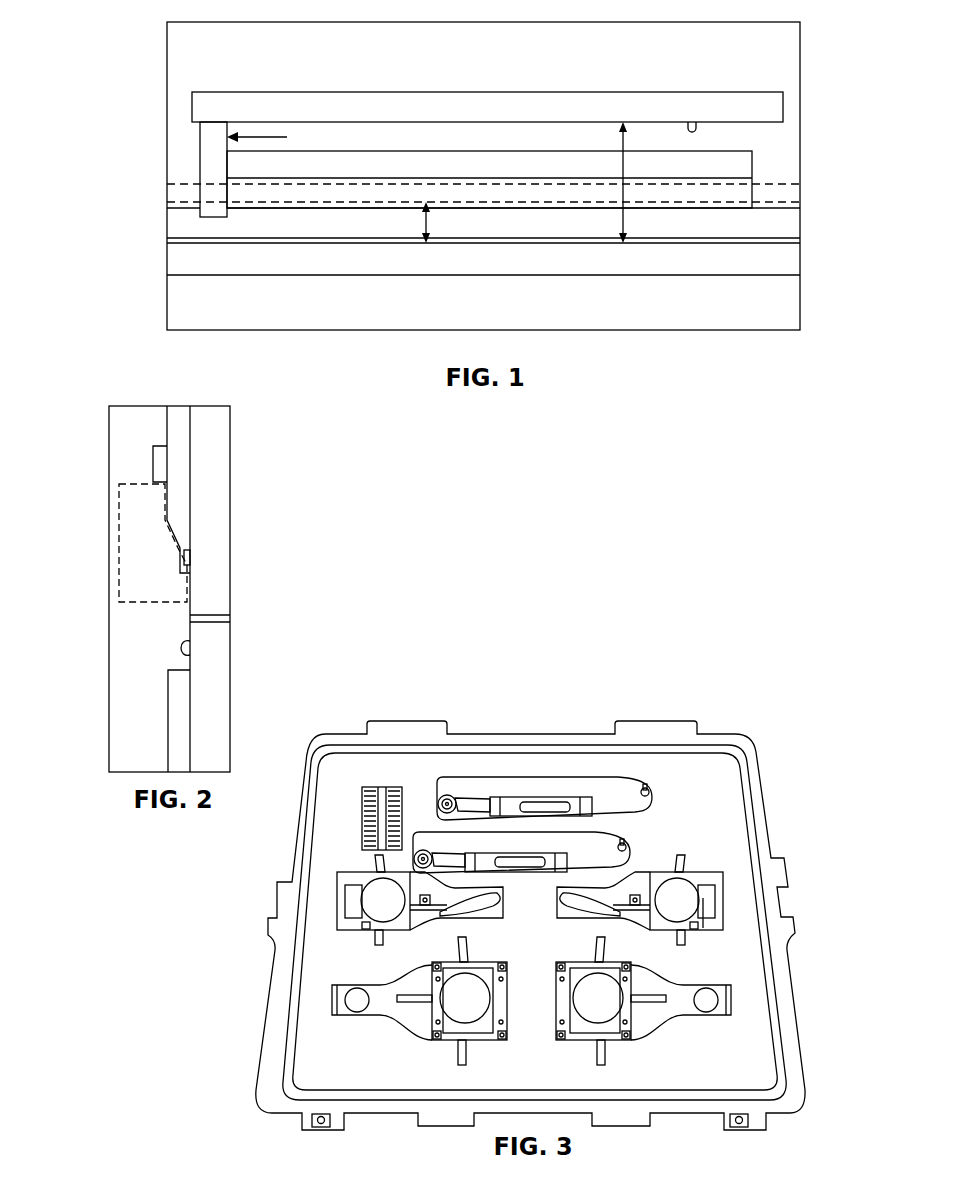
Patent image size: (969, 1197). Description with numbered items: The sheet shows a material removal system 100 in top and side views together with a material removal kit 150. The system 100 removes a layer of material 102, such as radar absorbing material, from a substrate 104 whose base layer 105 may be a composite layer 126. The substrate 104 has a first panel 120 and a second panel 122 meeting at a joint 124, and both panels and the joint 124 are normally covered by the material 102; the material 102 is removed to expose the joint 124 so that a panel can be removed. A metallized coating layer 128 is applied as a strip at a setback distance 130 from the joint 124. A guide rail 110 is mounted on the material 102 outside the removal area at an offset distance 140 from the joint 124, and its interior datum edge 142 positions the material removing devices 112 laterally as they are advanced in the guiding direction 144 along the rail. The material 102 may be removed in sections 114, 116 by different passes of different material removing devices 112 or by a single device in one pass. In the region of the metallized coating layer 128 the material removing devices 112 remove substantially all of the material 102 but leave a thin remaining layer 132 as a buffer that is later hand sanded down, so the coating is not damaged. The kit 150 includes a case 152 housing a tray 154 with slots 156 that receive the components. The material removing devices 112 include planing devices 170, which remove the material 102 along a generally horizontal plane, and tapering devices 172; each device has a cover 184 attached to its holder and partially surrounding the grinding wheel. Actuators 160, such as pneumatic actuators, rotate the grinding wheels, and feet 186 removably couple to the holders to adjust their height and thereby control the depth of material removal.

In FIG. 1, the material removal system 100 is at (240, 72).
In FIG. 2, the material removal system 100 is at (85, 398).
In FIG. 1, the material 102 is at (342, 138).
In FIG. 2, the material 102 is at (180, 420).
In FIG. 1, the substrate 104 is at (183, 256).
In FIG. 2, the substrate 104 is at (215, 460).
In FIG. 1, the base layer 105 is at (787, 220).
In FIG. 2, the base layer 105 is at (178, 625).
In FIG. 1, the guide rail 110 is at (450, 102).
In FIG. 2, the guide rail 110 is at (155, 462).
In FIG. 1, the material removing device 112 is at (208, 152).
In FIG. 2, the material removing device 112 is at (117, 590).
In FIG. 3, the material removing device 112 is at (693, 892).
In FIG. 1, the first section 114 is at (538, 180).
In FIG. 2, the first section 114 is at (180, 555).
In FIG. 1, the second section 116 is at (570, 163).
In FIG. 2, the second section 116 is at (175, 540).
In FIG. 1, the first panel 120 is at (177, 212).
In FIG. 2, the first panel 120 is at (215, 565).
In FIG. 1, the second panel 122 is at (200, 260).
In FIG. 2, the second panel 122 is at (218, 688).
In FIG. 1, the joint 124 is at (260, 245).
In FIG. 2, the joint 124 is at (218, 618).
In FIG. 1, the composite layer 126 is at (315, 225).
In FIG. 2, the composite layer 126 is at (185, 645).
In FIG. 1, the metallized coating layer 128 is at (183, 186).
In FIG. 2, the metallized coating layer 128 is at (190, 558).
In FIG. 1, the setback distance 130 is at (455, 215).
In FIG. 1, the thin remaining layer 132 is at (493, 165).
In FIG. 1, the offset distance 140 is at (623, 145).
In FIG. 1, the datum edge 142 is at (700, 122).
In FIG. 2, the datum edge 142 is at (160, 490).
In FIG. 1, the guiding direction 144 is at (260, 137).
In FIG. 3, the material removal kit 150 is at (770, 822).
In FIG. 3, the case 152 is at (795, 1035).
In FIG. 3, the tray 154 is at (748, 965).
In FIG. 3, the slot 156 is at (717, 915).
In FIG. 3, the actuator 160 is at (481, 860).
In FIG. 3, the planing device 170 is at (467, 1010).
In FIG. 3, the tapering device 172 is at (378, 916).
In FIG. 3, the cover 184 is at (365, 898).
In FIG. 3, the feet 186 is at (378, 835).